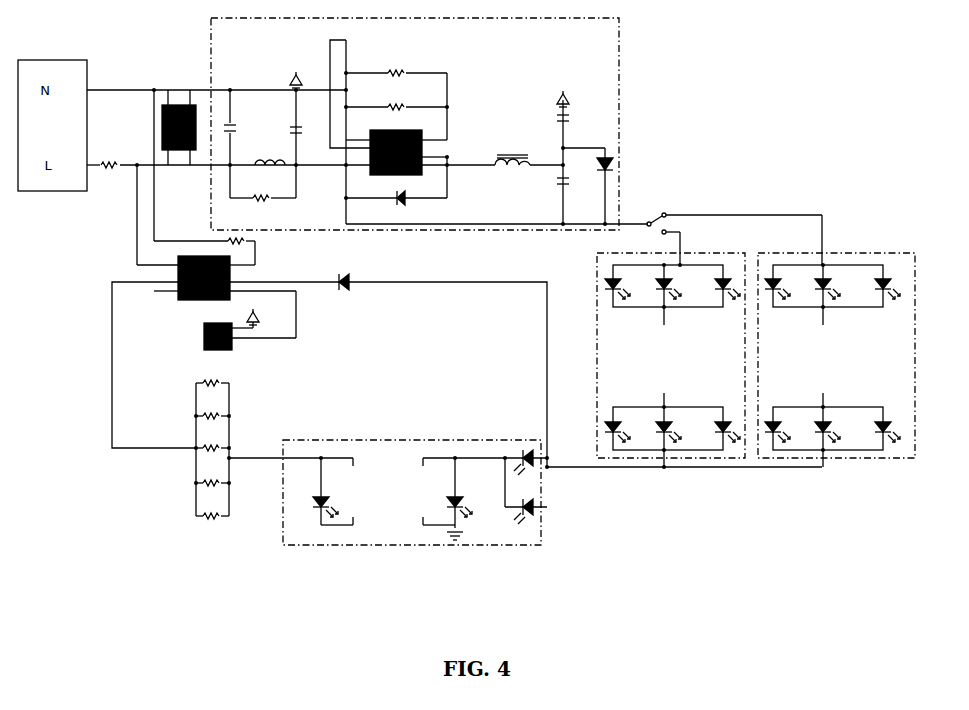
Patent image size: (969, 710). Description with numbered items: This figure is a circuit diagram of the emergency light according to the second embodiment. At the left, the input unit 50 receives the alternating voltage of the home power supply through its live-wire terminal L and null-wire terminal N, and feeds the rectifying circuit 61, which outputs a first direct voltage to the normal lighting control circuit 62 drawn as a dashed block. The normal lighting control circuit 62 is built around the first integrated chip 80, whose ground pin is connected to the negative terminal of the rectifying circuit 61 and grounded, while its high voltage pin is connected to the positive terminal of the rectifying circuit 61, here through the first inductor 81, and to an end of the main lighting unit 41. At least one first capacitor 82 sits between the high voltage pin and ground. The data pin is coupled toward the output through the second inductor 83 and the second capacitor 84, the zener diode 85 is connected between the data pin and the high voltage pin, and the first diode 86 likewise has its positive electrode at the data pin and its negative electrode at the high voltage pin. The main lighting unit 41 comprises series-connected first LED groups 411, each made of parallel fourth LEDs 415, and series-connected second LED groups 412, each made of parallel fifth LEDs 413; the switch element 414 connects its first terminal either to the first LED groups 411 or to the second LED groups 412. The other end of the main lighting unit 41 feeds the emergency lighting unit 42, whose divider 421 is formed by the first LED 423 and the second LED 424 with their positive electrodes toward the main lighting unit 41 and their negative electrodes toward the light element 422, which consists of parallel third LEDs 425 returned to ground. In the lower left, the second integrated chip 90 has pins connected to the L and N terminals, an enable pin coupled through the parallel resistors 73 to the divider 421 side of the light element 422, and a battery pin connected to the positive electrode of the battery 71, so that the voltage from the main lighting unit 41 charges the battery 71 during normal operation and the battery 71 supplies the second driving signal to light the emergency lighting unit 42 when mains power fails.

The input unit 50 is at (87, 70).
The rectifying circuit 61 is at (173, 103).
The normal lighting control circuit 62 is at (622, 48).
The first integrated chip 80 is at (405, 130).
The first inductor 81 is at (267, 160).
The first capacitor 82 is at (237, 124).
The second inductor 83 is at (510, 152).
The second capacitor 84 is at (555, 182).
The zener diode 85 is at (618, 168).
The first diode 86 is at (343, 292).
The second integrated chip 90 is at (245, 272).
The battery 71 is at (200, 340).
The resistors 73 is at (213, 520).
The main lighting unit 41 is at (752, 388).
The first LED groups 411 is at (656, 388).
The second LED groups 412 is at (843, 369).
The fifth LEDs 413 is at (900, 286).
The switch element 414 is at (652, 212).
The fourth LEDs 415 is at (606, 288).
The emergency lighting unit 42 is at (451, 502).
The divider 421 is at (555, 485).
The light element 422 is at (435, 545).
The first LED 423 is at (527, 440).
The second LED 424 is at (538, 515).
The third LEDs 425 is at (313, 515).